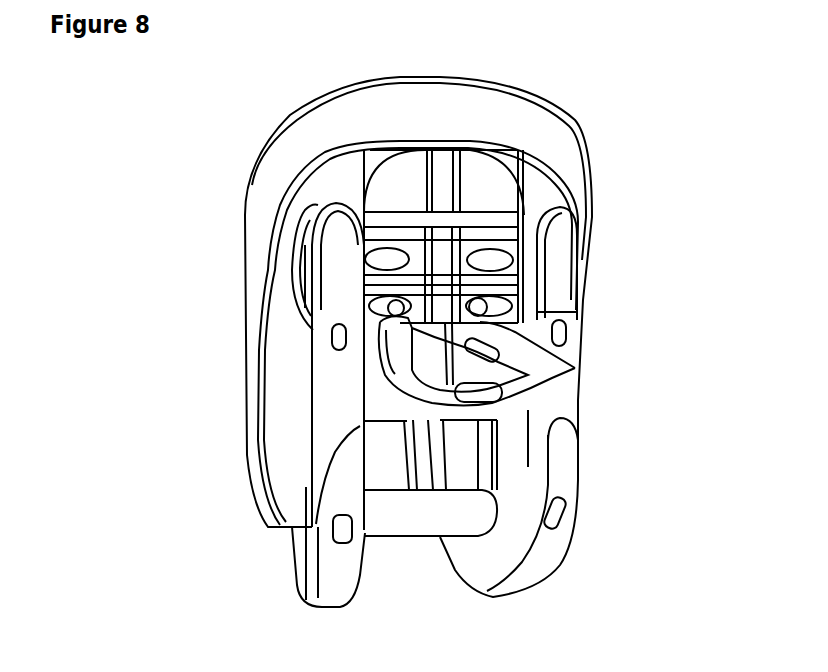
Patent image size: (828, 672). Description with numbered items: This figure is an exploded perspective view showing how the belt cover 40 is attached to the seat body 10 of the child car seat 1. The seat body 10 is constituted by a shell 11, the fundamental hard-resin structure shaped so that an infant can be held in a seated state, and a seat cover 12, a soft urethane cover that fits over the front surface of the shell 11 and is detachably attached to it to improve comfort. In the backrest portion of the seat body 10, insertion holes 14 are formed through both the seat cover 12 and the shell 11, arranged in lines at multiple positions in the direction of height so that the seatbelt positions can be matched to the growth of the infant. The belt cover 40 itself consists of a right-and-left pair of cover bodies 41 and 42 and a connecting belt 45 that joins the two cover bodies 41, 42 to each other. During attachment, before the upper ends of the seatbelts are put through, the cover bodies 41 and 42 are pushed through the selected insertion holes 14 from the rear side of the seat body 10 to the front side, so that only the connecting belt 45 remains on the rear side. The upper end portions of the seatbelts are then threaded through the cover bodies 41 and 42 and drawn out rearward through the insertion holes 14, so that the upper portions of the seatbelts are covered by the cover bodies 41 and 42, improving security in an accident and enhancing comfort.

The child car seat 1 is at (608, 98).
The seat body 10 is at (143, 248).
The shell 11 is at (277, 347).
The seat cover 12 is at (255, 254).
The insertion holes 14 is at (496, 260).
The belt cover 40 is at (579, 370).
The cover body 41 is at (342, 364).
The cover body 42 is at (546, 328).
The connecting belt 45 is at (540, 408).